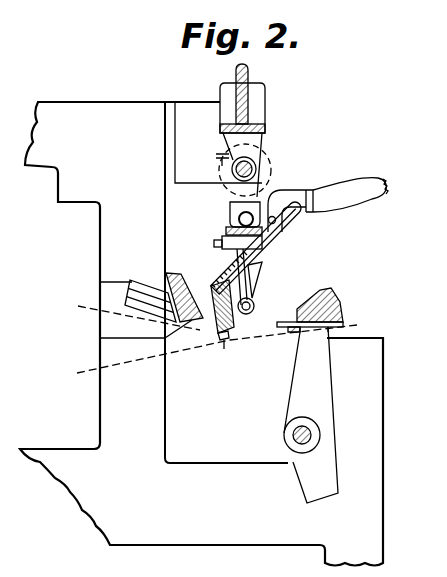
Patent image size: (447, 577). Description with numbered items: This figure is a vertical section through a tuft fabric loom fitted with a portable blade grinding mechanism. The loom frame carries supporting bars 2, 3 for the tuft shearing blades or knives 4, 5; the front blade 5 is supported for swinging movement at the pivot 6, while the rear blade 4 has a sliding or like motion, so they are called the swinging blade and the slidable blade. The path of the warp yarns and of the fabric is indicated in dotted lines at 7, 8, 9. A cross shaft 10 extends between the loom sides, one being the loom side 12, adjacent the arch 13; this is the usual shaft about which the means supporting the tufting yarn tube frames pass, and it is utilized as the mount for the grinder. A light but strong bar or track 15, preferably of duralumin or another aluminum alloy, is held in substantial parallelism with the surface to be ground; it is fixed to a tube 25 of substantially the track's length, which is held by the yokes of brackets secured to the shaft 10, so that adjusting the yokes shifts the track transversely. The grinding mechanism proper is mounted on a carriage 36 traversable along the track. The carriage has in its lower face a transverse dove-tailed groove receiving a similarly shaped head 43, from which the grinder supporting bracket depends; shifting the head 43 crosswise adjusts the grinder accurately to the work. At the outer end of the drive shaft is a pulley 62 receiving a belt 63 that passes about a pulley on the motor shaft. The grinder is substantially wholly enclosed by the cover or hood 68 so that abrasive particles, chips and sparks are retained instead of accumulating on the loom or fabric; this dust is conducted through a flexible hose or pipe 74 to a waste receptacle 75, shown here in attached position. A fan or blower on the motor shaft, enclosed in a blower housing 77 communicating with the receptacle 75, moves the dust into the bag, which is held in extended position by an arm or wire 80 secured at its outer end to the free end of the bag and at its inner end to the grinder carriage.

The supporting bar 2 is at (172, 278).
The supporting bar 3 is at (333, 295).
The slidable or rear blade 4 is at (214, 308).
The swinging or front blade 5 is at (288, 321).
The pivot for swinging movement 6 is at (311, 435).
The path of warp yarns and fabric 7 is at (84, 311).
The path of warp yarns and fabric 8 is at (90, 373).
The path of warp yarns and fabric 9 is at (358, 327).
The cross shaft 10 is at (257, 164).
The loom side 12 is at (185, 472).
The arch 13 is at (249, 79).
The bar or track 15 is at (238, 220).
The tube 25 is at (232, 204).
The carriage 36 is at (226, 232).
The head 43 is at (233, 270).
The pulley 62 is at (259, 305).
The belt 63 is at (275, 266).
The enclosing cover or hood 68 is at (225, 332).
The flexible hose or pipe 74 is at (282, 243).
The waste receptacle 75 is at (355, 201).
The blower housing 77 is at (287, 200).
The arm or wire 80 is at (381, 178).